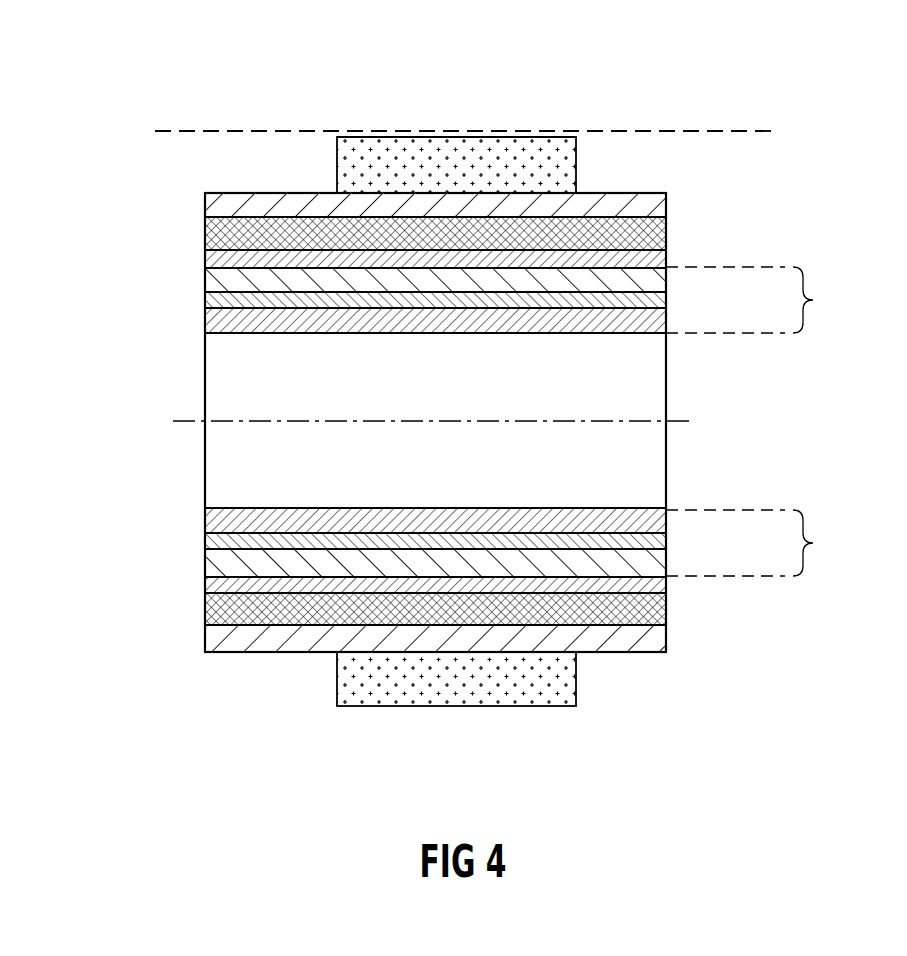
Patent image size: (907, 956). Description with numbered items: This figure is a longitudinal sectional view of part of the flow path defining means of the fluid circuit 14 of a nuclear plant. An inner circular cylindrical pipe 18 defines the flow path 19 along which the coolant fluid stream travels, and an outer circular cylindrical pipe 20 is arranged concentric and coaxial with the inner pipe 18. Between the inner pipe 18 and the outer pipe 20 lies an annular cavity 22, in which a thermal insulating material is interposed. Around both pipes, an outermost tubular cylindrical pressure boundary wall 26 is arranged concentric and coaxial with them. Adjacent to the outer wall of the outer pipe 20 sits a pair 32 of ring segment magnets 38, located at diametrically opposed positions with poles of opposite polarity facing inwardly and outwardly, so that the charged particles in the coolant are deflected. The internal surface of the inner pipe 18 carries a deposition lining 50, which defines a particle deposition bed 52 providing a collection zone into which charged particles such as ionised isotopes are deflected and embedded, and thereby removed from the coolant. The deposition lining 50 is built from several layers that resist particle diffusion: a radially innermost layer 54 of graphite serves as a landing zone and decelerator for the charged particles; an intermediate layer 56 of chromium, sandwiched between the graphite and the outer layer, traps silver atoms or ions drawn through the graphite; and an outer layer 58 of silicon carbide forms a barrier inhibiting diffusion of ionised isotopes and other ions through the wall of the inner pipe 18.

The fluid circuit 14 is at (145, 198).
The inner circular cylindrical pipe 18 is at (660, 257).
The flow path 19 is at (292, 380).
The outer circular cylindrical pipe 20 is at (585, 202).
The annular cavity 22 is at (660, 230).
The outermost tubular cylindrical pressure boundary wall 26 is at (747, 130).
The pair of ring segment magnets 32 is at (452, 125).
The ring segment magnet 38 is at (552, 148).
The deposition lining 50 is at (762, 421).
The particle deposition bed 52 is at (202, 320).
The radially innermost layer 54 is at (655, 325).
The intermediate layer 56 is at (213, 300).
The outer layer 58 is at (652, 280).